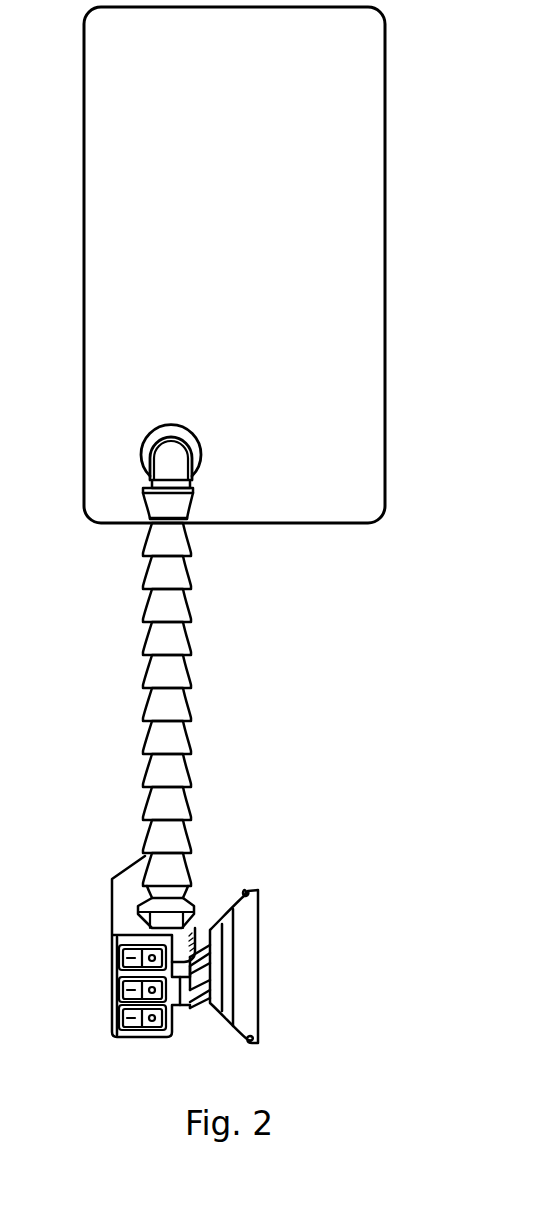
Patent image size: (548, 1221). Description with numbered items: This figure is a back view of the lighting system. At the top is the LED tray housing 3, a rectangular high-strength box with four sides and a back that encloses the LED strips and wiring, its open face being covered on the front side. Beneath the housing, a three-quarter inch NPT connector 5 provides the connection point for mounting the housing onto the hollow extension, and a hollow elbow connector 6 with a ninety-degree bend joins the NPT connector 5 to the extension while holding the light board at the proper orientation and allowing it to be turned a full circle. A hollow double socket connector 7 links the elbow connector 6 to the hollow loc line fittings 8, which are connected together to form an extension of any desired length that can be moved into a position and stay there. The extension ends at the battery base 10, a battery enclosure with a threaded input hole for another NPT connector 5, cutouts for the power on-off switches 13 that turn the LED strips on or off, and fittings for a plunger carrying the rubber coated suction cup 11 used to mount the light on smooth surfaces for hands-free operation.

The LED tray housing 3 is at (386, 300).
The NPT connector 5 is at (148, 456).
The elbow connector 6 is at (152, 430).
The double socket connector 7 is at (148, 539).
The loc line fitting 8 is at (193, 677).
The battery base 10 is at (112, 879).
The suction cup 11 is at (260, 978).
The power on-off switches 13 is at (119, 957).